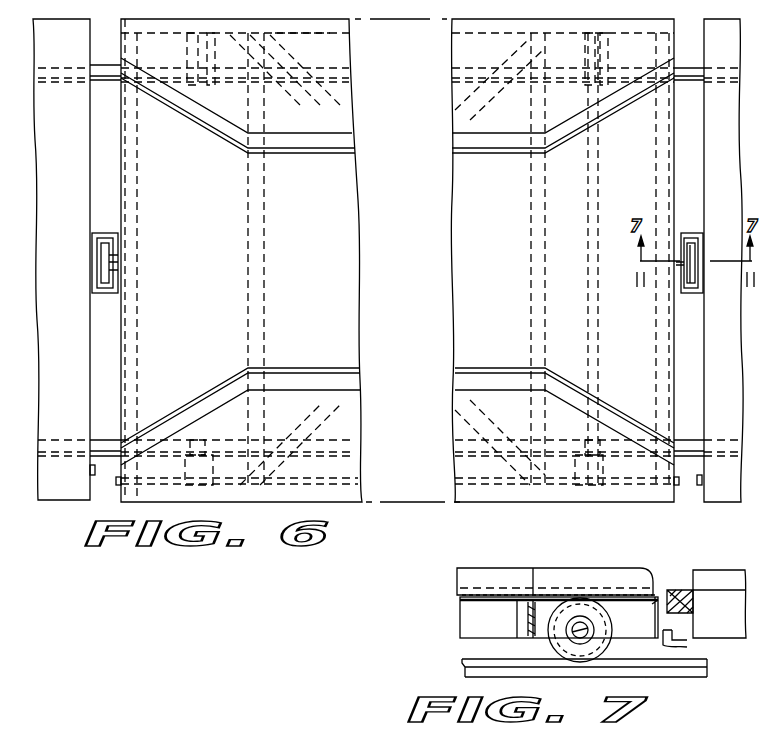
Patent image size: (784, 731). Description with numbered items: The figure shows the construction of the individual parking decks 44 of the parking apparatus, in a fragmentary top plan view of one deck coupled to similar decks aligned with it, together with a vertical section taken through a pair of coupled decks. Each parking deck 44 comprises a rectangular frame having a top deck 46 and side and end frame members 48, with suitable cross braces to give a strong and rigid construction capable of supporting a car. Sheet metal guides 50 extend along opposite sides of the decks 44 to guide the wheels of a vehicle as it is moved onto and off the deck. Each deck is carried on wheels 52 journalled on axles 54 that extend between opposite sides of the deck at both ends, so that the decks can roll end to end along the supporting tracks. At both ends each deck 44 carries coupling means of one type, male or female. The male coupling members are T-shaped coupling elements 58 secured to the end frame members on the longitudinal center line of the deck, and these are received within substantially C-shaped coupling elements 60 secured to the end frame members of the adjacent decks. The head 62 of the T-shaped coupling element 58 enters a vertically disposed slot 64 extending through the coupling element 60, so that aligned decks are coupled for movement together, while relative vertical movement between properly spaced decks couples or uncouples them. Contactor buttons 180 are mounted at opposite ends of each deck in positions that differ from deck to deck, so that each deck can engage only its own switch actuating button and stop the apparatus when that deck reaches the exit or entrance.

In FIG. 6, the parking deck 44 is at (500, 262).
In FIG. 7, the parking deck 44 is at (470, 618).
In FIG. 7, the top deck 46 is at (615, 596).
In FIG. 7, the side and end frame members 48 is at (655, 600).
In FIG. 6, the sheet metal guides 50 is at (338, 152).
In FIG. 7, the sheet metal guides 50 is at (510, 545).
In FIG. 7, the wheels 52 is at (565, 606).
In FIG. 6, the axles 54 is at (597, 370).
In FIG. 7, the axles 54 is at (585, 640).
In FIG. 6, the T-shaped coupling element 58 is at (110, 252).
In FIG. 7, the T-shaped coupling element 58 is at (680, 594).
In FIG. 6, the coupling element 60 is at (92, 237).
In FIG. 7, the coupling element 60 is at (700, 609).
In FIG. 6, the head 62 is at (684, 275).
In FIG. 6, the vertically disposed slot 64 is at (694, 252).
In FIG. 6, the contactor buttons 180 is at (117, 483).
In FIG. 7, the contactor buttons 180 is at (682, 635).